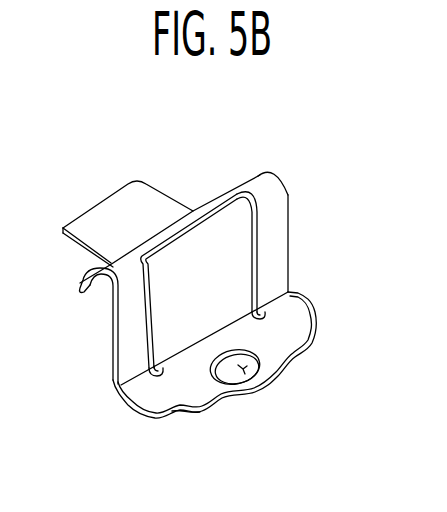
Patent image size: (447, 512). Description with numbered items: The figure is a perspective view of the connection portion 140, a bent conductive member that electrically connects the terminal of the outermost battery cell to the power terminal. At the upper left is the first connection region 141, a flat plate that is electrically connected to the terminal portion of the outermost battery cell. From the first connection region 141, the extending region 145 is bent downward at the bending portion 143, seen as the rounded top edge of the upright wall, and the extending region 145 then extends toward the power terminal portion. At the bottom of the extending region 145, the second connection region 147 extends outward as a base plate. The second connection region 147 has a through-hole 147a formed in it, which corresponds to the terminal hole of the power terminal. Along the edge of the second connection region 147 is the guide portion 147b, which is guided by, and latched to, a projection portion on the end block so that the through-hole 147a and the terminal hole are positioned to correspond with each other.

The connection portion 140 is at (212, 99).
The first connection region 141 is at (105, 212).
The bending portion 143 is at (262, 188).
The extending region 145 is at (275, 253).
The second connection region 147 is at (277, 347).
The through-hole 147a is at (258, 368).
The guide portion 147b is at (187, 420).